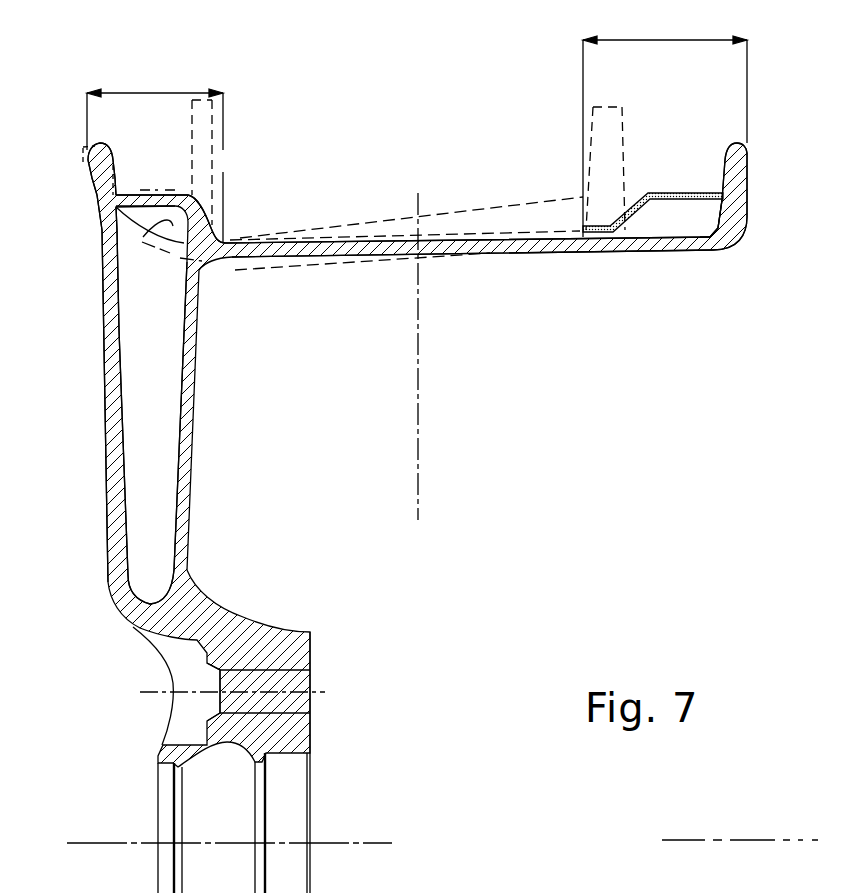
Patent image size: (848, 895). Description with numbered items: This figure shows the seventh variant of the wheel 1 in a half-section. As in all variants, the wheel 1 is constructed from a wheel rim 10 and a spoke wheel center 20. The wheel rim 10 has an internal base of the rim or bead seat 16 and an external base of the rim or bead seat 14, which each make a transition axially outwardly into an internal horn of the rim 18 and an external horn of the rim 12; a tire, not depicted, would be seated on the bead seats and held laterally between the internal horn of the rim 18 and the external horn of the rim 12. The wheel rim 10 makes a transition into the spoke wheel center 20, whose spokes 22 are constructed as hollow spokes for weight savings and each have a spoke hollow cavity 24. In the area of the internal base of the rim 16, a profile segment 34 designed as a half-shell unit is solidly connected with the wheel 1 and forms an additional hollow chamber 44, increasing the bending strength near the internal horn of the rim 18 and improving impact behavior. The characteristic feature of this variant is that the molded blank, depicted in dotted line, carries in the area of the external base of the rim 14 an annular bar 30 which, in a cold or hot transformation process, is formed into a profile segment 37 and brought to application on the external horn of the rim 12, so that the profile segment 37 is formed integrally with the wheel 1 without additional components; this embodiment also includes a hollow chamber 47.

The wheel 1 is at (346, 168).
The wheel rim 10 is at (512, 243).
The external horn of the rim 12 is at (88, 163).
The external base of the rim 14 is at (155, 154).
The internal base of the rim 16 is at (665, 122).
The internal horn of the rim 18 is at (739, 173).
The spoke wheel center 20 is at (105, 633).
The spokes 22 is at (102, 426).
The spoke hollow cavity 24 is at (137, 367).
The annular bar 30 is at (199, 177).
The profile segment 34 is at (662, 220).
The profile segment 37 is at (138, 206).
The hollow chamber 44 is at (693, 218).
The hollow chamber 47 is at (178, 242).